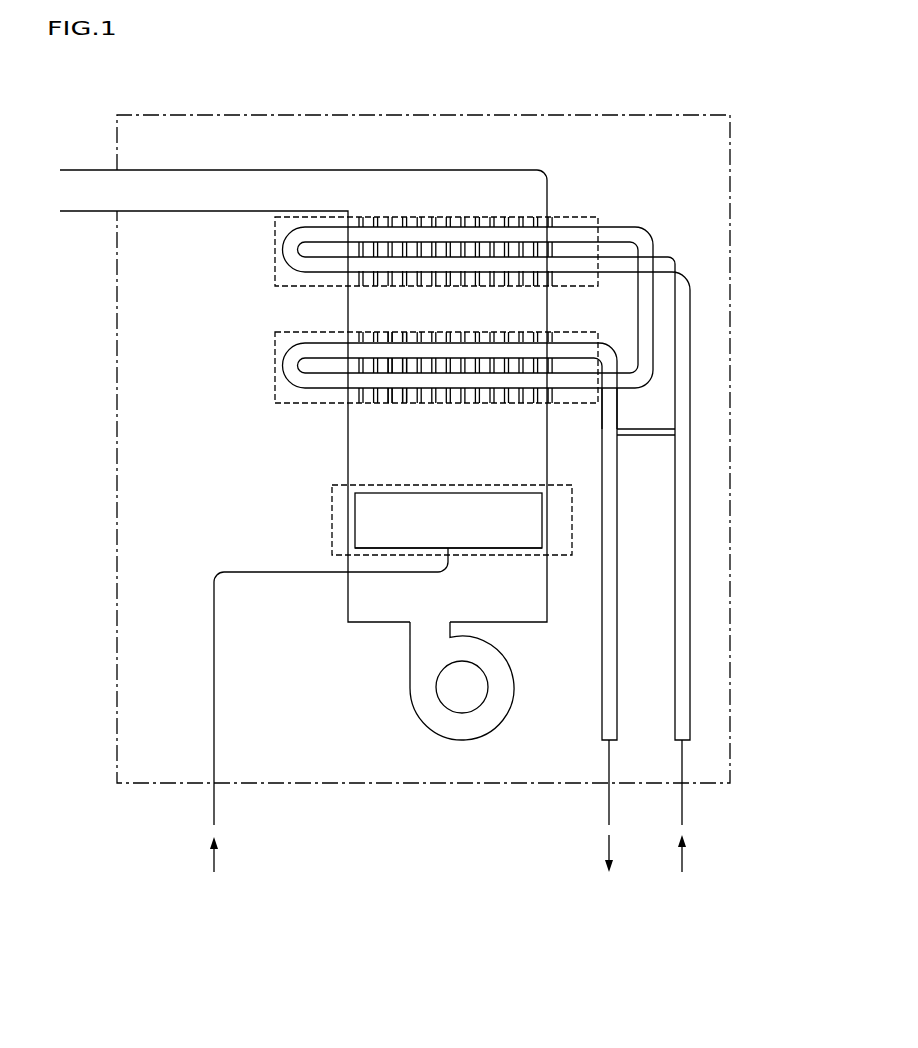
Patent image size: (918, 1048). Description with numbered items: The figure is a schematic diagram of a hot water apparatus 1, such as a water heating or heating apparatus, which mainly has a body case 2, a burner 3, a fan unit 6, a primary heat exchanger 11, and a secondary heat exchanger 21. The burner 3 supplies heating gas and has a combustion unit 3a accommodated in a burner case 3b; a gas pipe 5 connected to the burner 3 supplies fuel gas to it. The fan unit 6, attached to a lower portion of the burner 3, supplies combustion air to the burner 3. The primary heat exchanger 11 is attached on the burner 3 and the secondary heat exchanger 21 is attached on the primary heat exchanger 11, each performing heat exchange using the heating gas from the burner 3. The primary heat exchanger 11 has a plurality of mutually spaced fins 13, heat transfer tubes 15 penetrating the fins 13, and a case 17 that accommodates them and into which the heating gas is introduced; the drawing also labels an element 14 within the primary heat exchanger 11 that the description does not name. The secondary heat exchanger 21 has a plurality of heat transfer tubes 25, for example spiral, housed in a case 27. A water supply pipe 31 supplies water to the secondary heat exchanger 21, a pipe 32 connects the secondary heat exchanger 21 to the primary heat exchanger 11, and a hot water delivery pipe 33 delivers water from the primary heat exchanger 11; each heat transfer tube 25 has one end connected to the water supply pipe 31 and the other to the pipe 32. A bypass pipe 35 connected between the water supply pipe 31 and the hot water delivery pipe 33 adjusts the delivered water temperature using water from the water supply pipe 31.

The hot water apparatus 1 is at (679, 87).
The body case 2 is at (735, 157).
The burner 3 is at (572, 503).
The combustion unit 3a is at (525, 523).
The burner case 3b is at (515, 549).
The gas pipe 5 is at (277, 572).
The fan unit 6 is at (463, 692).
The primary heat exchanger 11 is at (598, 332).
The fins 13 is at (362, 395).
The heat transfer tube of secondary heat exchanger 14 is at (352, 389).
The heat transfer tubes 15 is at (393, 400).
The case 17 is at (610, 397).
The secondary heat exchanger 21 is at (598, 217).
The heat transfer tubes 25 is at (397, 273).
The case 27 is at (548, 283).
The water supply pipe 31 is at (683, 647).
The pipe 32 is at (645, 302).
The hot water delivery pipe 33 is at (608, 697).
The bypass pipe 35 is at (650, 429).